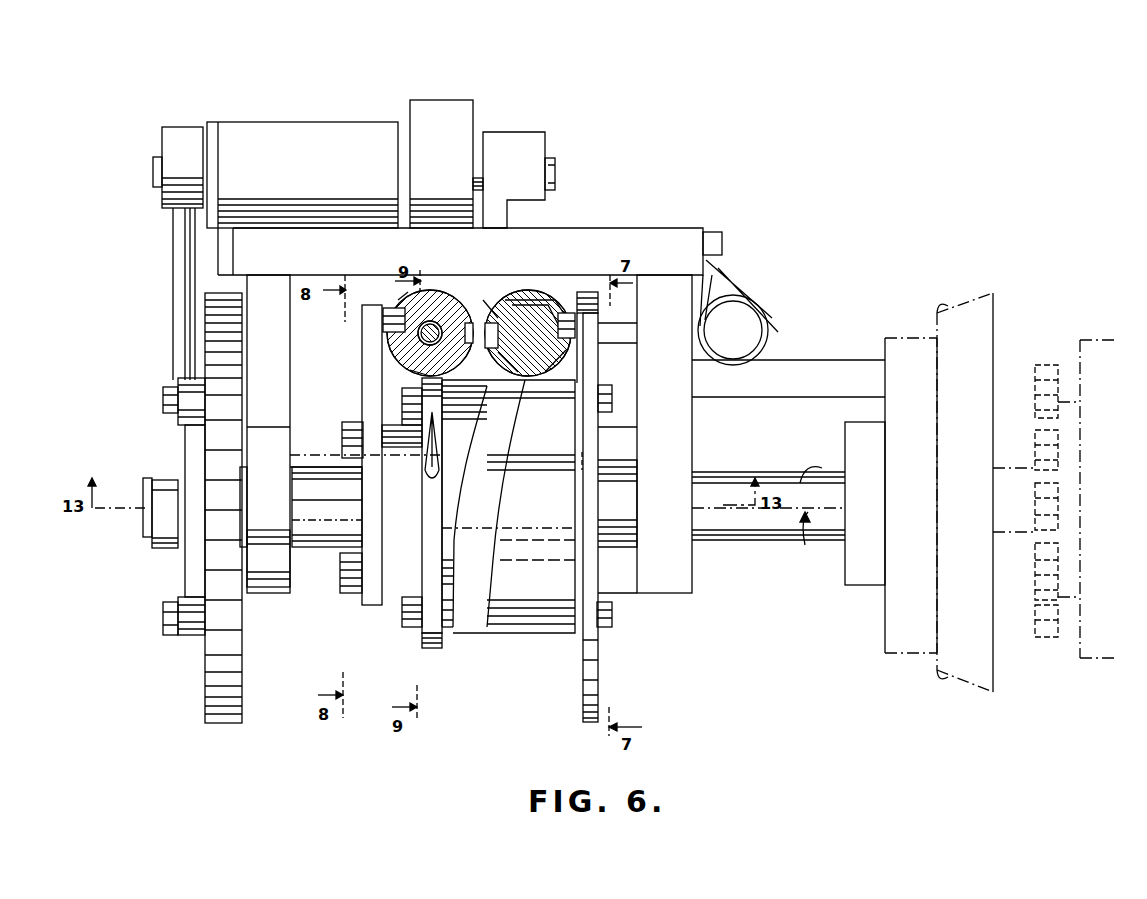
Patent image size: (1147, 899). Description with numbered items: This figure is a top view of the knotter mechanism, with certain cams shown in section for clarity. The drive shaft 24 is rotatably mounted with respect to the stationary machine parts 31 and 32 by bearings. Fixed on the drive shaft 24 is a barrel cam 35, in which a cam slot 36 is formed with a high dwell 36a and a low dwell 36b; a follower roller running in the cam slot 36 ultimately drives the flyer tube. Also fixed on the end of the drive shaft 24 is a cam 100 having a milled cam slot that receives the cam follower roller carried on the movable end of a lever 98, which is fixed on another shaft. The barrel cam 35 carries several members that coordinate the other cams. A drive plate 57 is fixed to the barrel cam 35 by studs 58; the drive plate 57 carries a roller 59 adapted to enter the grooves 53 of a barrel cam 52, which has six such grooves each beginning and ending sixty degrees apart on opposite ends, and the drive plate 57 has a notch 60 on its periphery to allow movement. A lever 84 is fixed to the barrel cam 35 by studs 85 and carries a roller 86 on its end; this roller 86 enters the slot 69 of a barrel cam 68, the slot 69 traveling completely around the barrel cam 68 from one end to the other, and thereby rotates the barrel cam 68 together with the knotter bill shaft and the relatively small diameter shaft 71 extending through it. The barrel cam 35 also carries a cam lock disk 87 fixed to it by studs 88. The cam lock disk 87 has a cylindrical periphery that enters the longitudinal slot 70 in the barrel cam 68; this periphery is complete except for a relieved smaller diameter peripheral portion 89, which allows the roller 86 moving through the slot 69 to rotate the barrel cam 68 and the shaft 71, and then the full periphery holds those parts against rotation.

The drive shaft 24 is at (738, 538).
The stationary machine part 31 is at (660, 572).
The stationary machine part 32 is at (272, 580).
The barrel cam 35 is at (550, 504).
The cam slot 36 is at (508, 480).
The high dwell 36a is at (465, 625).
The low dwell 36b is at (494, 396).
The barrel cam 52 is at (518, 293).
The grooves 53 is at (560, 295).
The drive plate 57 is at (592, 679).
The studs 58 is at (600, 626).
The roller 59 is at (575, 322).
The notch 60 is at (590, 435).
The barrel cam 68 is at (438, 291).
The slot 69 is at (398, 300).
The longitudinal slot 70 is at (498, 294).
The shaft 71 is at (480, 298).
The lever 84 is at (364, 378).
The studs 85 is at (340, 576).
The roller 86 is at (383, 318).
The cam lock disk 87 is at (425, 641).
The studs 88 is at (402, 613).
The relieved peripheral portion 89 is at (415, 370).
The lever 98 is at (178, 314).
The cam 100 is at (213, 690).